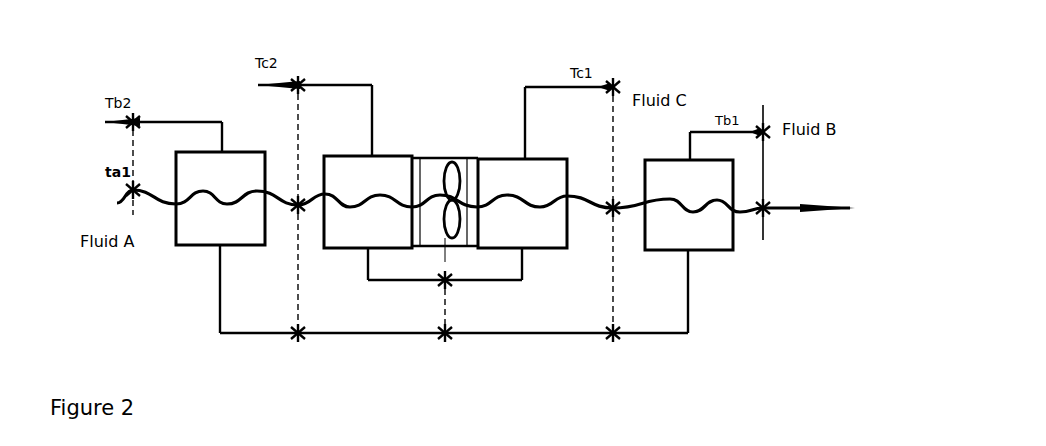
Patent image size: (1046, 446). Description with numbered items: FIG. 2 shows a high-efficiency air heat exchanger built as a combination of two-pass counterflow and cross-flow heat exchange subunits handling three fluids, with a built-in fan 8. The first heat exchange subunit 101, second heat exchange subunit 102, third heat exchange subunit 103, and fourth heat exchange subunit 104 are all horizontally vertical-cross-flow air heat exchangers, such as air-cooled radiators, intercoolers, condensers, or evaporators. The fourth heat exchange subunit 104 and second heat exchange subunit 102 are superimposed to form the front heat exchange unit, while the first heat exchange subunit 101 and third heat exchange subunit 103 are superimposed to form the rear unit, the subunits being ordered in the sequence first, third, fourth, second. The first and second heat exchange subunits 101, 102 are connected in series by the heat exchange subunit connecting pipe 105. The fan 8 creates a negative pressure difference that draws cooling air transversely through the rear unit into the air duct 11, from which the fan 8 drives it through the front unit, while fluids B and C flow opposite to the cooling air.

The heat exchange subunit 1 101 is at (243, 163).
The heat exchange subunit 2 102 is at (660, 172).
The heat exchange subunit 3 103 is at (394, 170).
The heat exchange subunit 4 104 is at (488, 168).
The heat exchange subunit connecting pipe 105 is at (490, 280).
The fan 8 is at (450, 167).
The air duct 11 is at (464, 168).